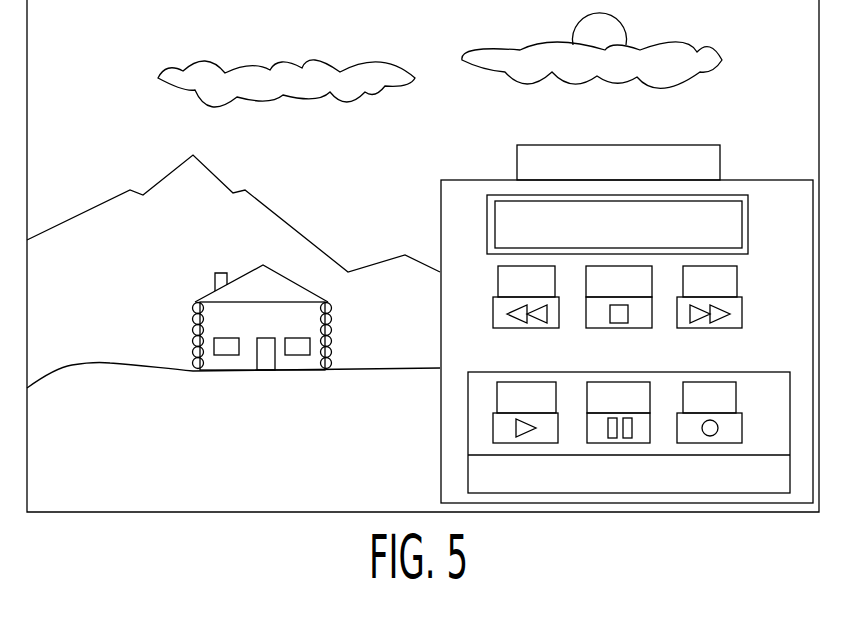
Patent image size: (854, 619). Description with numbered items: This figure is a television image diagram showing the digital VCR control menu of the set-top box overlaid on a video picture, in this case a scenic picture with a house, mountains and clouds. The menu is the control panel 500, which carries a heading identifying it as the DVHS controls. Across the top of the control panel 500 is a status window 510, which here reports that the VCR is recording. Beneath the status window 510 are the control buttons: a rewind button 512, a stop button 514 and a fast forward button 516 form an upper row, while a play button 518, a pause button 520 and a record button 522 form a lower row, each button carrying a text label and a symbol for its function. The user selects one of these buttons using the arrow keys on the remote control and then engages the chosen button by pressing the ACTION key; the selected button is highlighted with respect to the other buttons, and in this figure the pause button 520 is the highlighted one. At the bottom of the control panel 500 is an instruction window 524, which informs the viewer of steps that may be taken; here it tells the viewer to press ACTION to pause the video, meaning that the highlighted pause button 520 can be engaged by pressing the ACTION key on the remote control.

The control panel 500 is at (450, 158).
The status window 510 is at (737, 228).
The rewind button 512 is at (493, 313).
The stop button 514 is at (627, 330).
The fast forward button 516 is at (745, 313).
The play button 518 is at (493, 427).
The pause button 520 is at (630, 382).
The record (REC) button 522 is at (745, 437).
The instruction window 524 is at (482, 478).